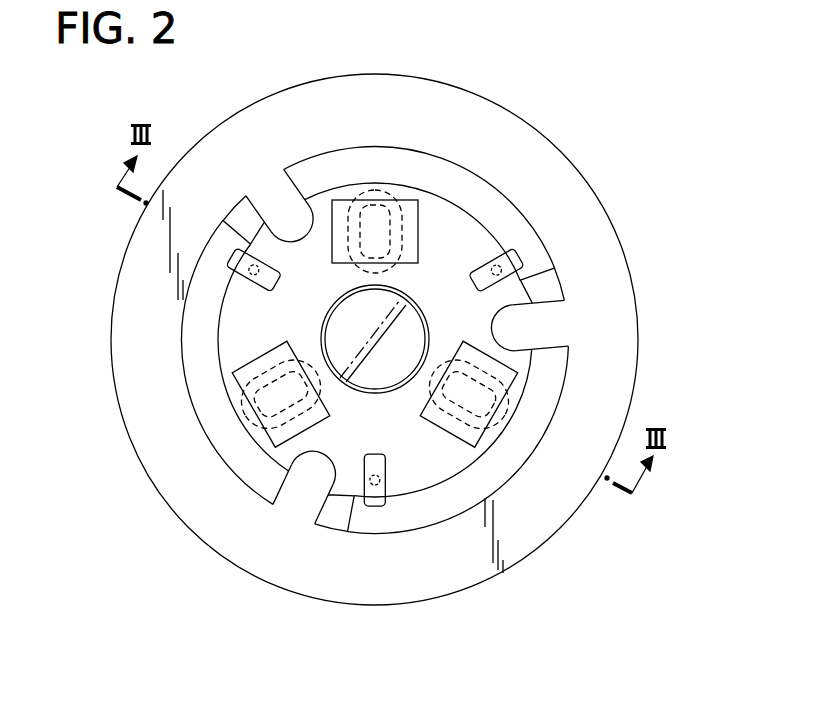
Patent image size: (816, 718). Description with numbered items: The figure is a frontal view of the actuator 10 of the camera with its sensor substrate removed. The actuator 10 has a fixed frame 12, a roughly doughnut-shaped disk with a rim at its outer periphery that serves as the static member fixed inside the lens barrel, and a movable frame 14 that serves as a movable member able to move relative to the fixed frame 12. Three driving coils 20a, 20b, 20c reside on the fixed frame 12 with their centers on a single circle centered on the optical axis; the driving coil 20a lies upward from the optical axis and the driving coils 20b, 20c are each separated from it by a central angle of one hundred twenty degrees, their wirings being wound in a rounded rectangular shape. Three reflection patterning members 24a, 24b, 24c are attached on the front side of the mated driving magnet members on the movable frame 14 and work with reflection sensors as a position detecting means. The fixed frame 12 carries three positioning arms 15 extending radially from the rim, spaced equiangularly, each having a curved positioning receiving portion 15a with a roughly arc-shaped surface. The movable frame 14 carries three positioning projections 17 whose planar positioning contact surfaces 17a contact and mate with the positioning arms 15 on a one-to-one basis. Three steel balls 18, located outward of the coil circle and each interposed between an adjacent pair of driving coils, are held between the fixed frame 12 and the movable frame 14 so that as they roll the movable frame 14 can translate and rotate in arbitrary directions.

The actuator 10 is at (601, 97).
The fixed frame 12 is at (487, 533).
The movable frame 14 is at (452, 240).
The positioning arm 15 is at (277, 201).
The positioning receiving portion 15a is at (260, 257).
The positioning projection 17 is at (228, 261).
The positioning contact surface 17a is at (260, 248).
The steel ball 18 is at (248, 275).
The driving coil 20a is at (370, 186).
The driving coil 20b is at (252, 413).
The driving coil 20c is at (508, 415).
The reflection patterning member 24a is at (411, 200).
The reflection patterning member 24b is at (250, 397).
The reflection patterning member 24c is at (475, 442).